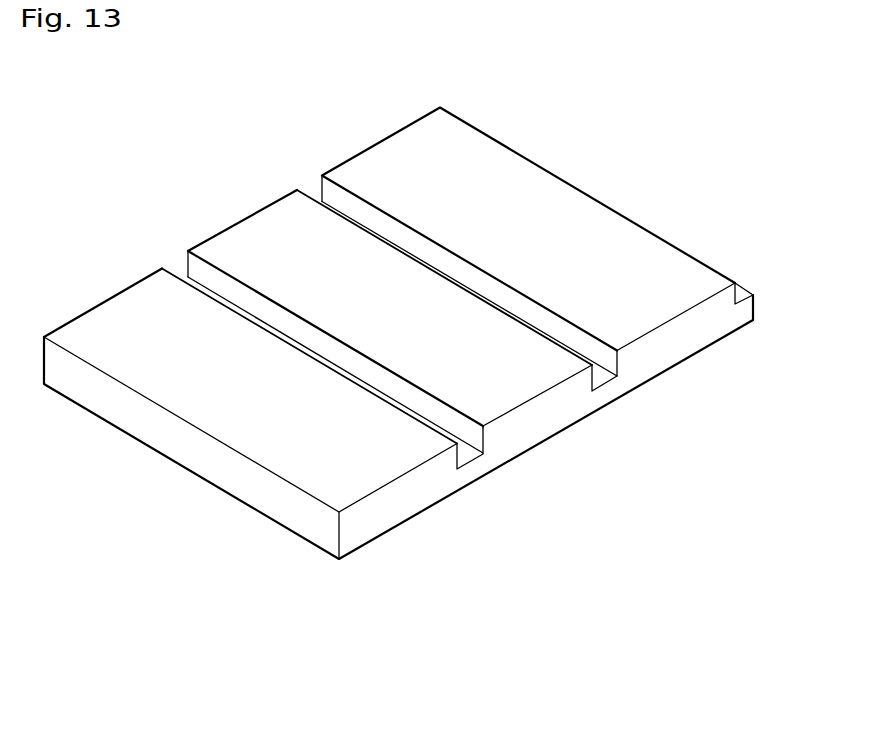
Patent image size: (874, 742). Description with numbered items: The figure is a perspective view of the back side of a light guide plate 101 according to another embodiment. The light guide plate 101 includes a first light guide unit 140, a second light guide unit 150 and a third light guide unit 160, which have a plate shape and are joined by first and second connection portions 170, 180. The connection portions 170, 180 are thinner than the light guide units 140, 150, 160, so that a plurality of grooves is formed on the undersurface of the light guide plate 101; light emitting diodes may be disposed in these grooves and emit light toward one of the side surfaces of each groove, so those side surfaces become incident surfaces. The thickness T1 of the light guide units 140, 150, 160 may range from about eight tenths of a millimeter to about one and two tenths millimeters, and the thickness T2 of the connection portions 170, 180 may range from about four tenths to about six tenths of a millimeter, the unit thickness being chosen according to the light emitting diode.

The light guide plate 101 is at (613, 162).
The first light guide unit 140 is at (123, 313).
The second light guide unit 150 is at (258, 237).
The third light guide unit 160 is at (402, 153).
The first connection portion 170 is at (463, 458).
The second connection portion 180 is at (600, 378).
The thickness of the light guide units T1 is at (399, 440).
The thickness of the connection portions T2 is at (471, 423).